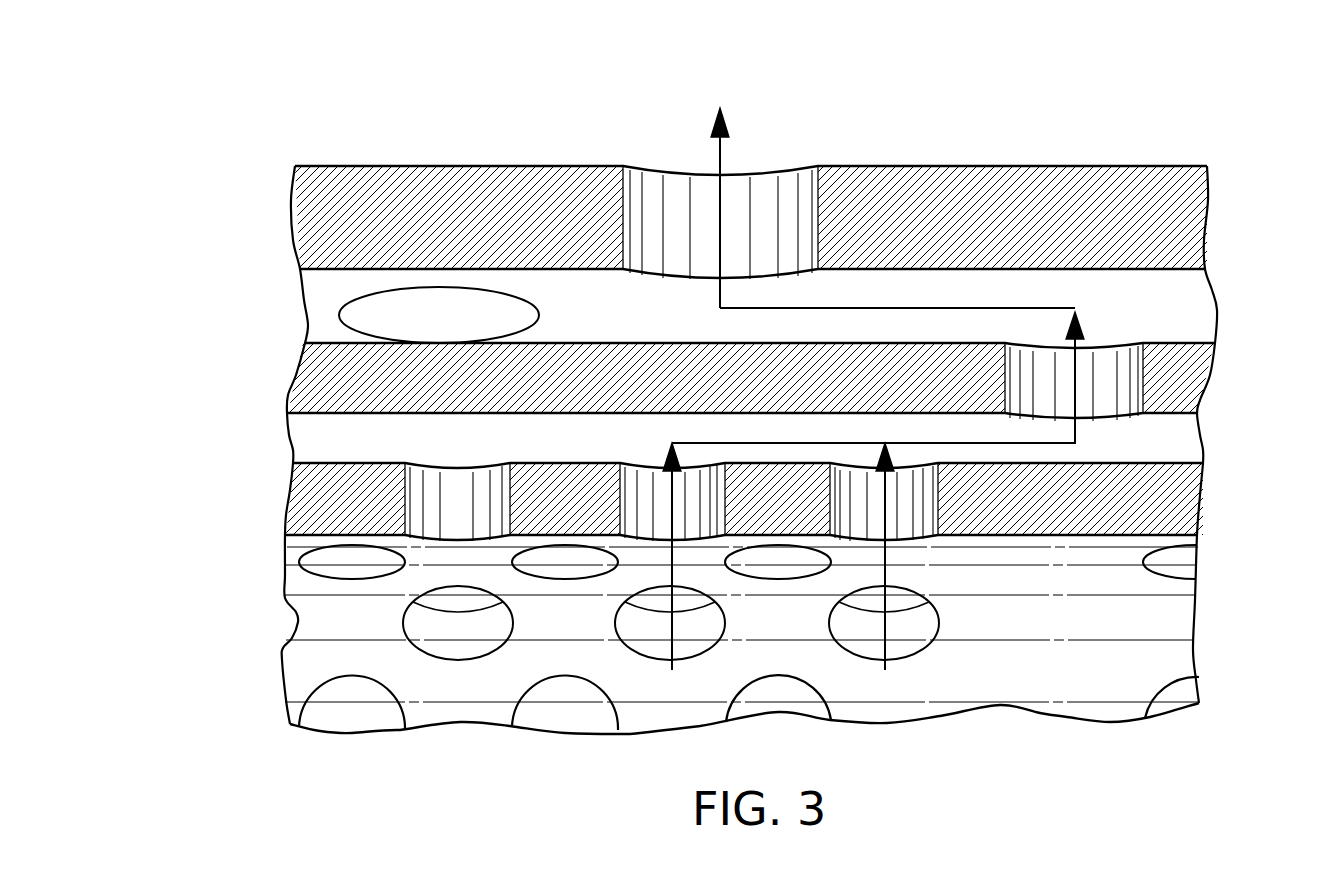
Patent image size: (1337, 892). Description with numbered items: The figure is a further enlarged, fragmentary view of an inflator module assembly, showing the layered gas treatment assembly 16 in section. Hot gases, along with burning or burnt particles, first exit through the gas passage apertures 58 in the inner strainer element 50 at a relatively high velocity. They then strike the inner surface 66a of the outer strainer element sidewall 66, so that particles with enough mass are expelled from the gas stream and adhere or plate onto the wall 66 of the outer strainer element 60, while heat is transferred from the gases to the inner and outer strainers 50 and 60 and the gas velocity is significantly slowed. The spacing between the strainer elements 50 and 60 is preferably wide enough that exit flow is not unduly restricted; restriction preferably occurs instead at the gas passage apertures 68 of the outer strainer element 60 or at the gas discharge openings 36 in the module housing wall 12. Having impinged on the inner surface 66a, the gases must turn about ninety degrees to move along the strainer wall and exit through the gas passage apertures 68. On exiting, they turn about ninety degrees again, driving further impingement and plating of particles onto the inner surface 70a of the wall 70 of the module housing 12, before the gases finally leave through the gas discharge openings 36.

The module housing 12 is at (960, 200).
The gas treatment assembly 16 is at (1072, 658).
The gas discharge openings 36 is at (767, 193).
The inner strainer element 50 is at (791, 537).
The gas passage apertures 58 is at (907, 517).
The outer strainer element 60 is at (1170, 378).
The outer strainer element sidewall 66 is at (720, 331).
The inner surface 66a is at (1172, 445).
The gas passage apertures 68 is at (1117, 357).
The wall 70 is at (802, 167).
The inner surface 70a is at (1200, 323).